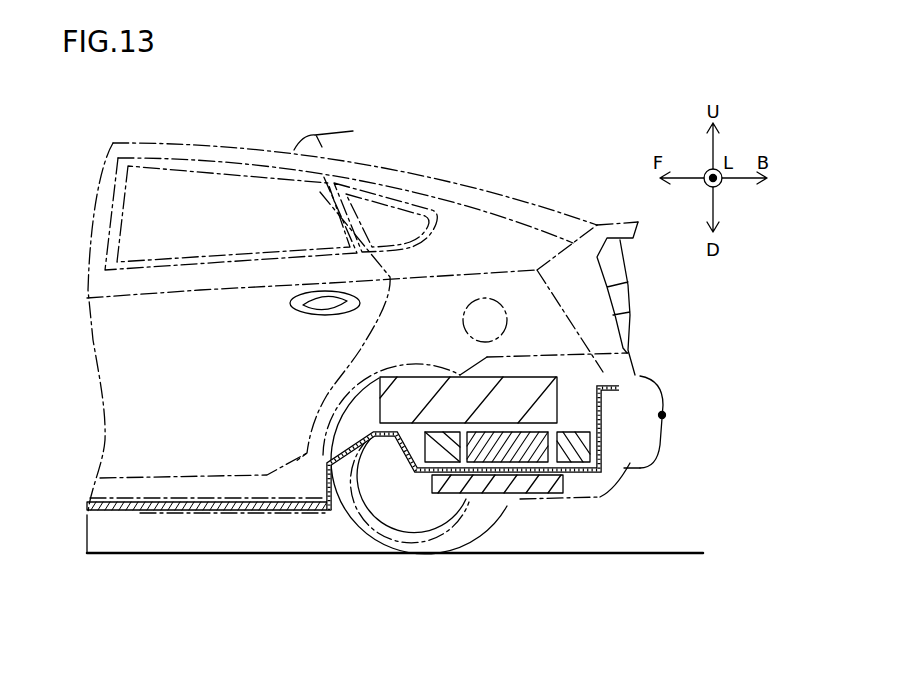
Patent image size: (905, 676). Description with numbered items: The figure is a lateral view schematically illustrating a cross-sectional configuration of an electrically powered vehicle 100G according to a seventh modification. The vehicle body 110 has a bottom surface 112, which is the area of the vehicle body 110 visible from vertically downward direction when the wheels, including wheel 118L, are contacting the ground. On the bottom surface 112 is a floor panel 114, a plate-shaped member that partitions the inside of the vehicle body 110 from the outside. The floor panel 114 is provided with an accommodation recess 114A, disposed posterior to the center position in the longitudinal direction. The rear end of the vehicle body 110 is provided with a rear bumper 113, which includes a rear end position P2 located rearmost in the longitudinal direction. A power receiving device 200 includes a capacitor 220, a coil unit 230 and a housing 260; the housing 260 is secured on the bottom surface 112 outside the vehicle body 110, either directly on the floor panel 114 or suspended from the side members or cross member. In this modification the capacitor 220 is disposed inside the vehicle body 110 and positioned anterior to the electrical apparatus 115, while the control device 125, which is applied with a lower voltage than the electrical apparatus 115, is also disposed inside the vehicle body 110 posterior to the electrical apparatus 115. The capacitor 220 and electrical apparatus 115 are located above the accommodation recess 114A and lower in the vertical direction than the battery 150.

The electrically powered vehicle 100G is at (148, 130).
The vehicle body 110 is at (210, 142).
The bottom surface 112 is at (162, 522).
The floor panel 114 is at (230, 512).
The accommodation recess 114A is at (603, 474).
The wheel 118L is at (350, 520).
The battery 150 is at (558, 378).
The power receiving device 200 is at (513, 619).
The capacitor 220 is at (433, 450).
The housing 260 is at (486, 529).
The coil unit 230 is at (510, 448).
The electrical apparatus 115 is at (507, 492).
The control device 125 is at (572, 450).
The rear bumper 113 is at (632, 448).
The rear end position P2 is at (662, 415).